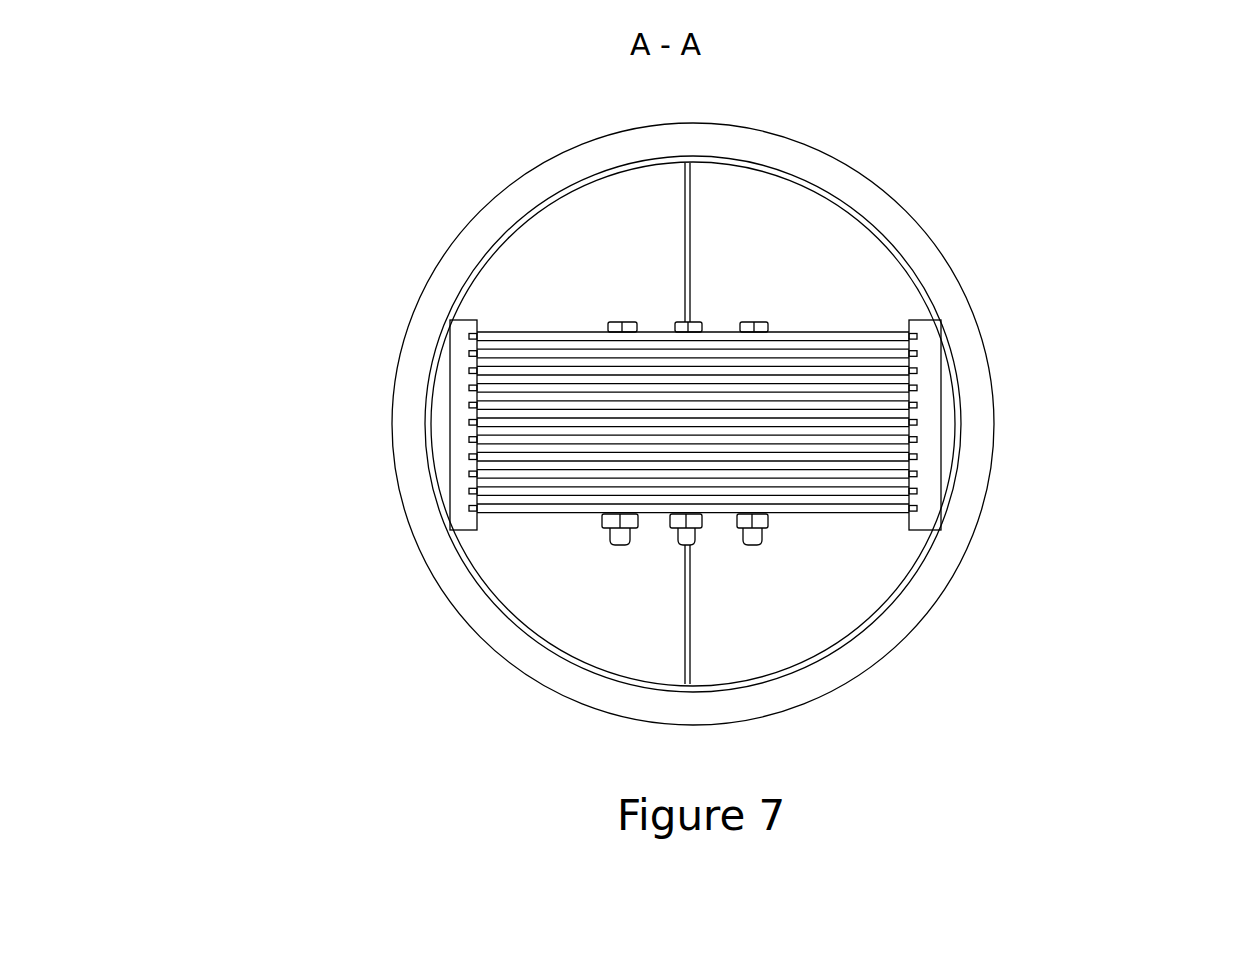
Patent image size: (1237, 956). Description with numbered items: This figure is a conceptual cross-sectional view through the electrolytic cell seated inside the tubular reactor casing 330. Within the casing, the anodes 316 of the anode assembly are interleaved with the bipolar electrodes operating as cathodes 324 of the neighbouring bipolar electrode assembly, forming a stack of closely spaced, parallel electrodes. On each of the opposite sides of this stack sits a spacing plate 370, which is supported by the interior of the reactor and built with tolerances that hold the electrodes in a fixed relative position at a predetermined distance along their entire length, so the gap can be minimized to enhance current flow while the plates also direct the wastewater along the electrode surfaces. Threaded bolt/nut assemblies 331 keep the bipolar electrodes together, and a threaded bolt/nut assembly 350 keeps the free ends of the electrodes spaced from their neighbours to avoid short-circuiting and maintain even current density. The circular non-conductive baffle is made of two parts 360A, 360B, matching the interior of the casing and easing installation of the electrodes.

The reactor casing 330 is at (812, 163).
The threaded bolt/nut assembly 331 is at (618, 322).
The threaded bolt/nut assembly 350 is at (708, 323).
The spacing plate 370 is at (460, 332).
The bipolar electrodes operating as cathodes 324 is at (503, 337).
The anodes 316 is at (882, 352).
The baffle part 360A is at (572, 603).
The baffle part 360B is at (817, 585).